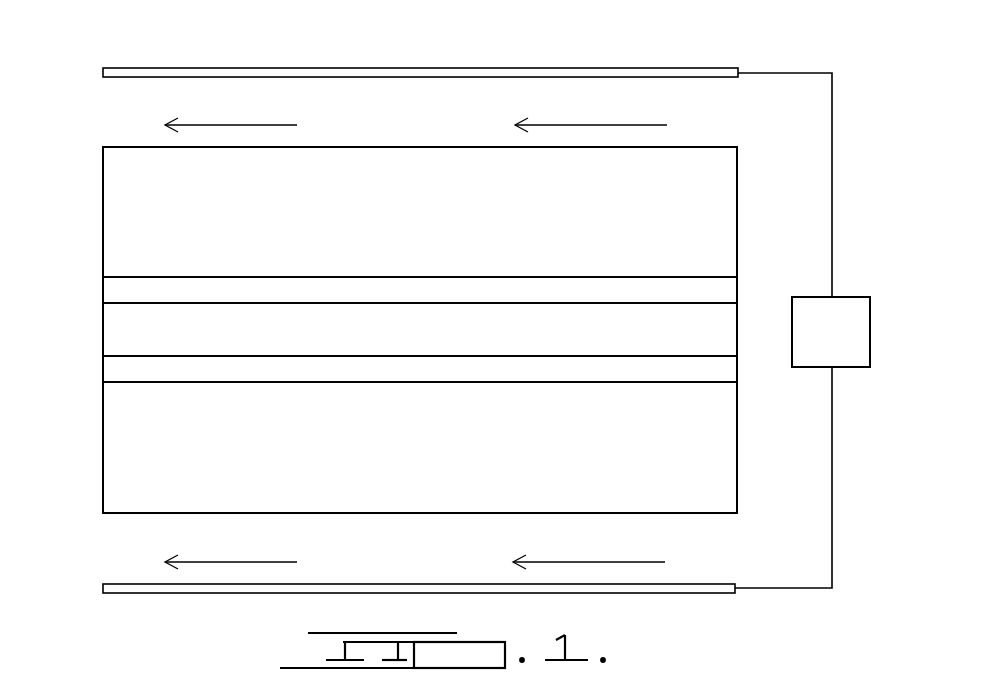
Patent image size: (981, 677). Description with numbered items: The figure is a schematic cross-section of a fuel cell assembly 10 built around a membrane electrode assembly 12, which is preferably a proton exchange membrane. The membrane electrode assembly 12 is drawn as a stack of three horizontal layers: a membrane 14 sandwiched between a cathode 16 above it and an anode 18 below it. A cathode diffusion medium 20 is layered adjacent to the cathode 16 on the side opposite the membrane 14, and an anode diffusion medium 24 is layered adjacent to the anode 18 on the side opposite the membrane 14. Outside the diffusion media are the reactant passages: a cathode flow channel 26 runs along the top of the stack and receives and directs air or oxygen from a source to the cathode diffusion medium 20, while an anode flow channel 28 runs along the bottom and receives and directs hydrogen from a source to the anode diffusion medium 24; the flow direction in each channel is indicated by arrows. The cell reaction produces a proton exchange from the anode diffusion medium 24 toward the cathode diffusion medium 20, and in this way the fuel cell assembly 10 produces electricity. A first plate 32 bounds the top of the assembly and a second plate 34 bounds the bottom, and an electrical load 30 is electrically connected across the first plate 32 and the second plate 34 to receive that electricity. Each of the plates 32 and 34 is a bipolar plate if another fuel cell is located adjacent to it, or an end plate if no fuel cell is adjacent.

The fuel cell assembly 10 is at (866, 125).
The membrane electrode assembly 12 is at (90, 290).
The membrane 14 is at (409, 343).
The cathode 16 is at (319, 293).
The anode 18 is at (241, 372).
The cathode diffusion medium 20 is at (509, 213).
The anode diffusion medium 24 is at (495, 464).
The cathode flow channel 26 is at (211, 116).
The anode flow channel 28 is at (211, 553).
The electrical load 30 is at (843, 308).
The first plate 32 is at (705, 78).
The second plate 34 is at (695, 588).